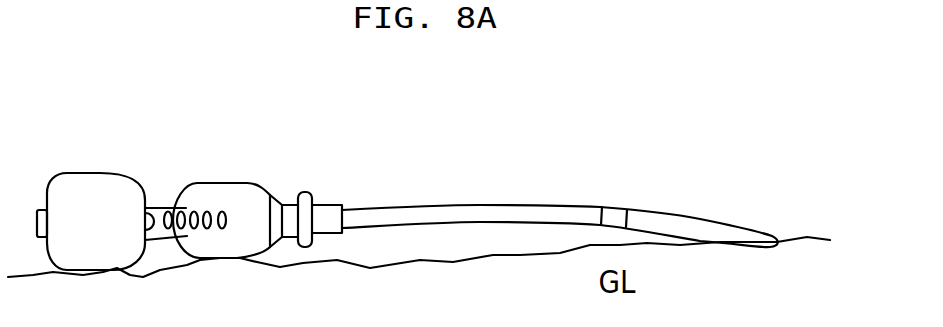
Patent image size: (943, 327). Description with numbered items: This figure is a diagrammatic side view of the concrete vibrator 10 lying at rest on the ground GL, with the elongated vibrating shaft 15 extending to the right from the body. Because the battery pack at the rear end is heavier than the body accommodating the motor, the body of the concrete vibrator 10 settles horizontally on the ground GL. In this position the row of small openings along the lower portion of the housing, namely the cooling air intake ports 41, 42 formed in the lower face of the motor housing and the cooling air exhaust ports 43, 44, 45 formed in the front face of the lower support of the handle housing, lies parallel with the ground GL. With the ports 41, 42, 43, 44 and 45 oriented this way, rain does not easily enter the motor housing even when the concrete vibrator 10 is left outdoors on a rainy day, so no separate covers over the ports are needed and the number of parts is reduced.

The concrete vibrator 10 is at (235, 195).
The arm 15 is at (492, 208).
The cooling air intake port 41 is at (225, 228).
The cooling air intake port 42 is at (208, 228).
The cooling air exhaust port 43 is at (193, 208).
The cooling air exhaust port 44 is at (182, 208).
The cooling air exhaust port 45 is at (175, 208).